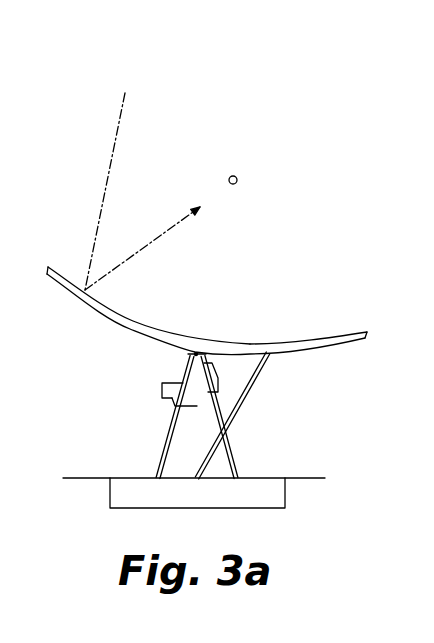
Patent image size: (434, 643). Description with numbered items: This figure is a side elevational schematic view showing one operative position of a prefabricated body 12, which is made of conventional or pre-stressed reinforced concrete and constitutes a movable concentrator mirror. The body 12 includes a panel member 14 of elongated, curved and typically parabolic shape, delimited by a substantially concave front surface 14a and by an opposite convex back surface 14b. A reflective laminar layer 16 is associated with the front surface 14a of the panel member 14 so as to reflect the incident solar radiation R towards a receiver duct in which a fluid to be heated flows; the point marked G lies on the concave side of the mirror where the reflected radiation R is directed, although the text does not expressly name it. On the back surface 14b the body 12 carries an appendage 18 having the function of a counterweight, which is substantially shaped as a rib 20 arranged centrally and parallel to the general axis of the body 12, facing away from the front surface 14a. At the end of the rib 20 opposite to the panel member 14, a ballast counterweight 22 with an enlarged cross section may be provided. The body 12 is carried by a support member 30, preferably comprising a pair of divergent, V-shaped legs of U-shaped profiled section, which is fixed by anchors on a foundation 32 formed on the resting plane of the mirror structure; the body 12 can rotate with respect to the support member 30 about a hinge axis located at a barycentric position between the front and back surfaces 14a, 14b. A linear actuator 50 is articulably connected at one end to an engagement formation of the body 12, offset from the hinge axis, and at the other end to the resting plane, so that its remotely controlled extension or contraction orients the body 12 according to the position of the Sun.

The prefabricated body 12 is at (327, 200).
The panel member 14 is at (130, 333).
The front surface 14a is at (134, 315).
The back surface 14b is at (85, 307).
The reflective laminar layer 16 is at (279, 342).
The appendage 18 is at (150, 386).
The rib 20 is at (175, 358).
The ballast counterweight 22 is at (170, 398).
The support member 30 is at (233, 453).
The foundation 32 is at (117, 493).
The linear actuator 50 is at (245, 403).
The incident solar radiation R is at (163, 232).
The center of curvature G is at (238, 178).